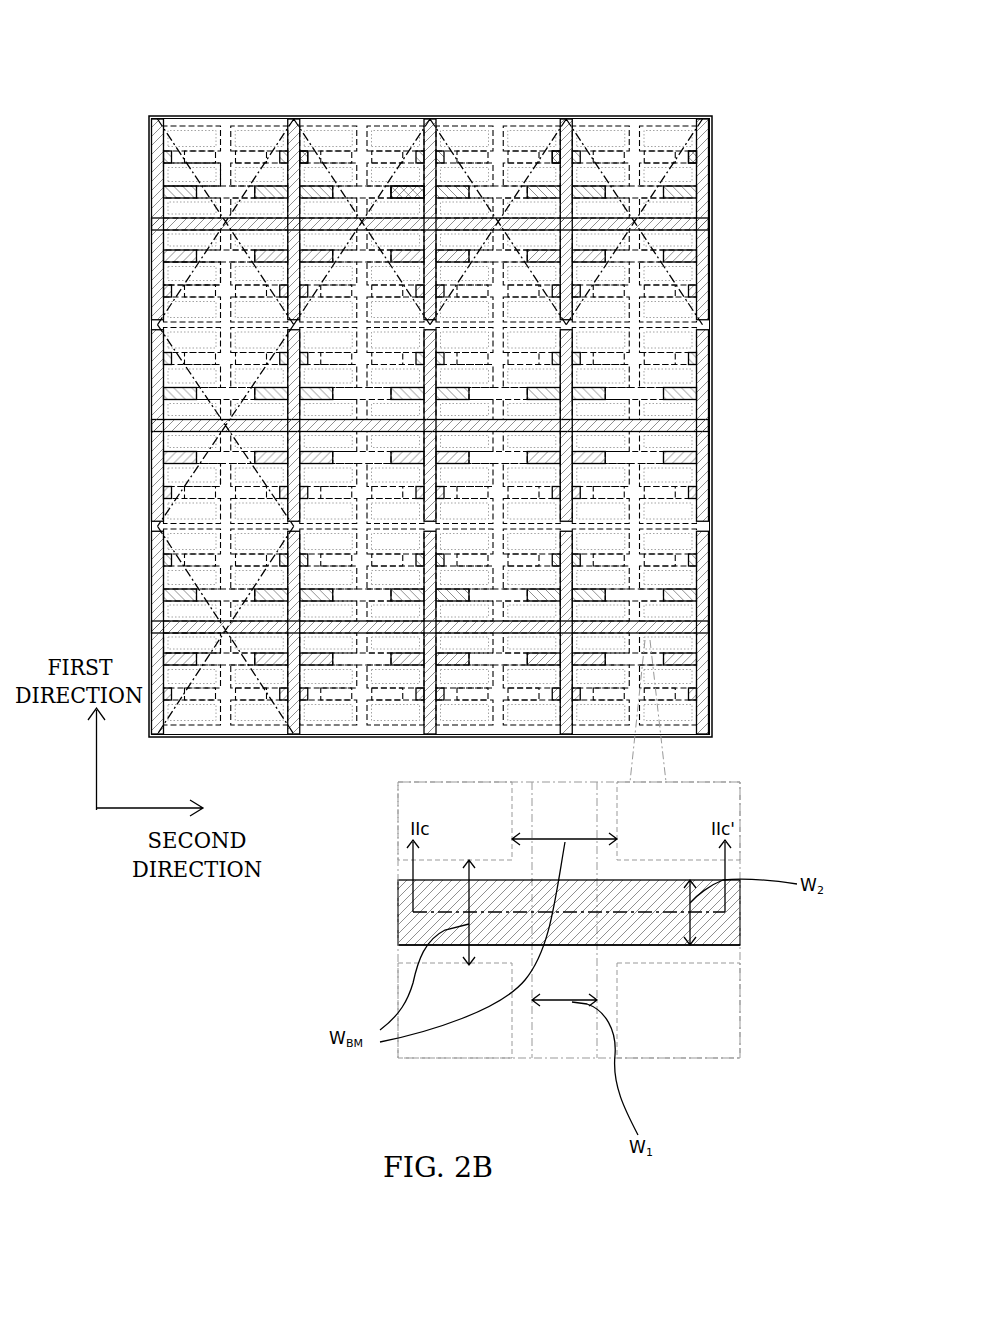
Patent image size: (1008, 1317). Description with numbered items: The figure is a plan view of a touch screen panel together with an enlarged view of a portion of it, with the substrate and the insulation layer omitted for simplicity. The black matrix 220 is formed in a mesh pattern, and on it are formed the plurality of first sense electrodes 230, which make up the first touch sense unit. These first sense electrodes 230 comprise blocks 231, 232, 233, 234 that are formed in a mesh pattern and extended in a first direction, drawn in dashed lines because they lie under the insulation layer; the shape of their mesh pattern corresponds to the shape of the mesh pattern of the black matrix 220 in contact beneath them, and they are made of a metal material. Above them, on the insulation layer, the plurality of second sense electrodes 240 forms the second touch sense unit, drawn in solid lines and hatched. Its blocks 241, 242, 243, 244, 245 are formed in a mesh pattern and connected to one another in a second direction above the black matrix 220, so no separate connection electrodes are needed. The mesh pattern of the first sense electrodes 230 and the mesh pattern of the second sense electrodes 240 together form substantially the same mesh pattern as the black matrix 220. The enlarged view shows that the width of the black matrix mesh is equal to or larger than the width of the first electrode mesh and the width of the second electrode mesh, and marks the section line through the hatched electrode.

The black matrix 220 is at (607, 817).
The first sense electrodes 230 is at (62, 237).
The block of first sense electrodes 231 is at (218, 175).
The block of first sense electrodes 232 is at (220, 270).
The block of first sense electrodes 233 is at (223, 477).
The block of first sense electrodes 234 is at (222, 648).
The second sense electrodes 240 is at (479, 474).
The block of second sense electrodes 241 is at (241, 394).
The block of second sense electrodes 242 is at (308, 153).
The block of second sense electrodes 243 is at (392, 188).
The block of second sense electrodes 244 is at (553, 157).
The block of second sense electrodes 245 is at (687, 152).